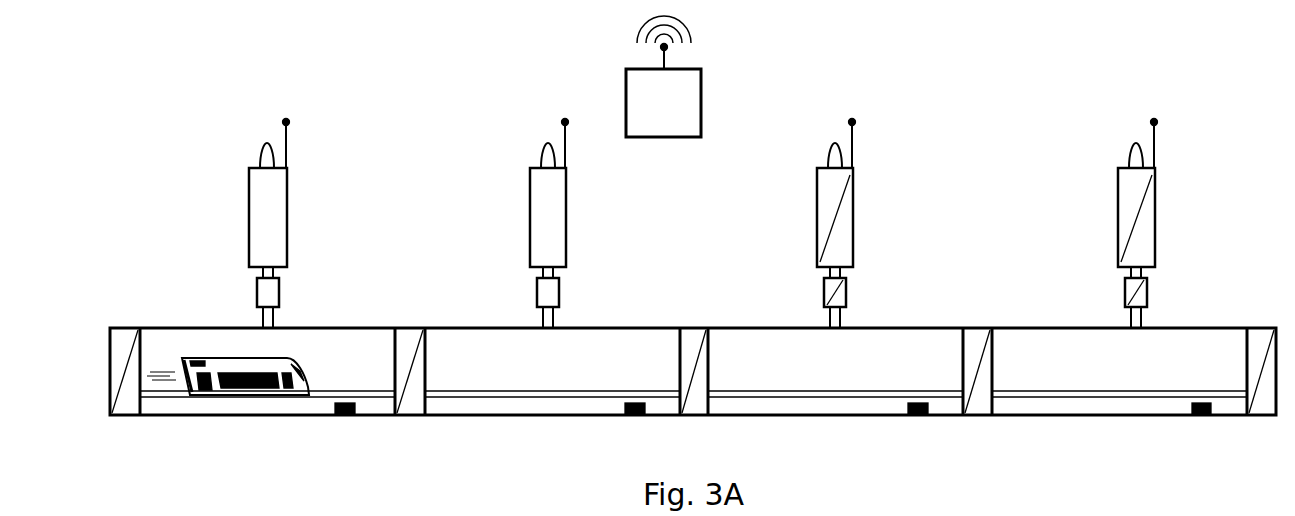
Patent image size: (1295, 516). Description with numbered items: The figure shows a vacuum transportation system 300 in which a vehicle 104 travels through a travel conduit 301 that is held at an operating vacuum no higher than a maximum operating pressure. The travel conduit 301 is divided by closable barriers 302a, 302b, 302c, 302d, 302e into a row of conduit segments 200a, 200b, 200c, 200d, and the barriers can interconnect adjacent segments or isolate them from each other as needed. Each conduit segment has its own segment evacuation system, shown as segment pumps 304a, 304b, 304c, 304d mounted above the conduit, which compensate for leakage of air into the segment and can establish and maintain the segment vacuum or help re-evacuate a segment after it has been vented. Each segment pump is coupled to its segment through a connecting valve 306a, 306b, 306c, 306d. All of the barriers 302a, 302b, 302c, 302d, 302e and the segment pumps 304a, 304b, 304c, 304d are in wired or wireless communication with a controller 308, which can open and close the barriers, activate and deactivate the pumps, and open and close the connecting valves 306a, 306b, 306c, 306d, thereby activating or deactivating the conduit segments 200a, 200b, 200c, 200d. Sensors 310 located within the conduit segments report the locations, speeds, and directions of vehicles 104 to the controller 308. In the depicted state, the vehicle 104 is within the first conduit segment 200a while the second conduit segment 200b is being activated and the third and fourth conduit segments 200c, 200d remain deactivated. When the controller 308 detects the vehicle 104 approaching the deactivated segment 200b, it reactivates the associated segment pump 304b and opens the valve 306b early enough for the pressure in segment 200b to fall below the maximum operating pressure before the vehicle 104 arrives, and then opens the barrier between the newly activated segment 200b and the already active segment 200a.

The vacuum transportation system 300 is at (401, 190).
The travel conduit 301 is at (313, 327).
The closable barrier 302a is at (128, 327).
The closable barrier 302b is at (410, 327).
The closable barrier 302c is at (697, 327).
The closable barrier 302d is at (982, 327).
The closable barrier 302e is at (1263, 327).
The segment evacuation system 304a is at (248, 210).
The segment evacuation system 304b is at (529, 210).
The segment evacuation system 304c is at (816, 220).
The segment evacuation system 304d is at (1117, 220).
The connecting valve 306a is at (280, 292).
The connecting valve 306b is at (557, 297).
The connecting valve 306c is at (845, 297).
The connecting valve 306d is at (1147, 293).
The controller 308 is at (663, 76).
The sensor 310 is at (345, 417).
The vehicle 104 is at (222, 358).
The conduit segment 200a is at (267, 367).
The conduit segment 200b is at (552, 367).
The conduit segment 200c is at (835, 367).
The conduit segment 200d is at (1119, 367).